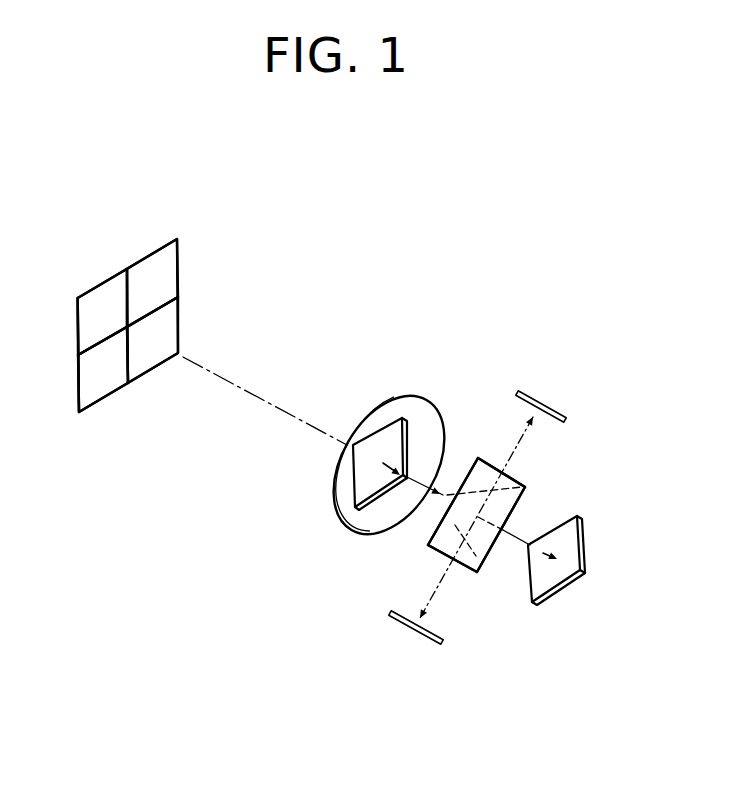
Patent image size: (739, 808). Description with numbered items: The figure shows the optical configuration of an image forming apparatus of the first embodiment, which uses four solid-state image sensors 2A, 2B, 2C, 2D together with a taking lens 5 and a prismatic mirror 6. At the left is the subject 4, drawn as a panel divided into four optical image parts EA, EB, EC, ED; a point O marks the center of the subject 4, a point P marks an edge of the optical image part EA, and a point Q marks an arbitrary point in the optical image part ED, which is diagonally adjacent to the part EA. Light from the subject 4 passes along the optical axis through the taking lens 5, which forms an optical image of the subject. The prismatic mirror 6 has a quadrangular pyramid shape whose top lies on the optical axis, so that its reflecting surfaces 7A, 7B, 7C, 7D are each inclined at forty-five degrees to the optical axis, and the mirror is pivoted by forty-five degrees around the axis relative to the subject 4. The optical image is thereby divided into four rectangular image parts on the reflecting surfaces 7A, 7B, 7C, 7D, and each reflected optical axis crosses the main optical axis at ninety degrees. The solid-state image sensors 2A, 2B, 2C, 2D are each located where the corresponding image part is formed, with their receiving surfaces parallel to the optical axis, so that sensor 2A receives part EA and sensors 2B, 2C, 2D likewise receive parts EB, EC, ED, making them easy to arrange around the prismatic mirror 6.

The subject 4 is at (178, 262).
The optical image part EA is at (102, 312).
The optical image part EB is at (152, 283).
The optical image part EC is at (103, 369).
The optical image part ED is at (152, 340).
The point P is at (78, 298).
The point O is at (126, 336).
The point Q is at (128, 329).
The taking lens 5 is at (394, 399).
The solid-state image sensor 2D is at (362, 485).
The prismatic mirror 6 is at (520, 513).
The reflecting surface 7A is at (500, 537).
The reflecting surface 7B is at (455, 559).
The reflecting surface 7C is at (513, 473).
The reflecting surface 7D is at (443, 500).
The solid-state image sensor 2A is at (588, 557).
The solid-state image sensor 2B is at (445, 640).
The solid-state image sensor 2C is at (532, 392).